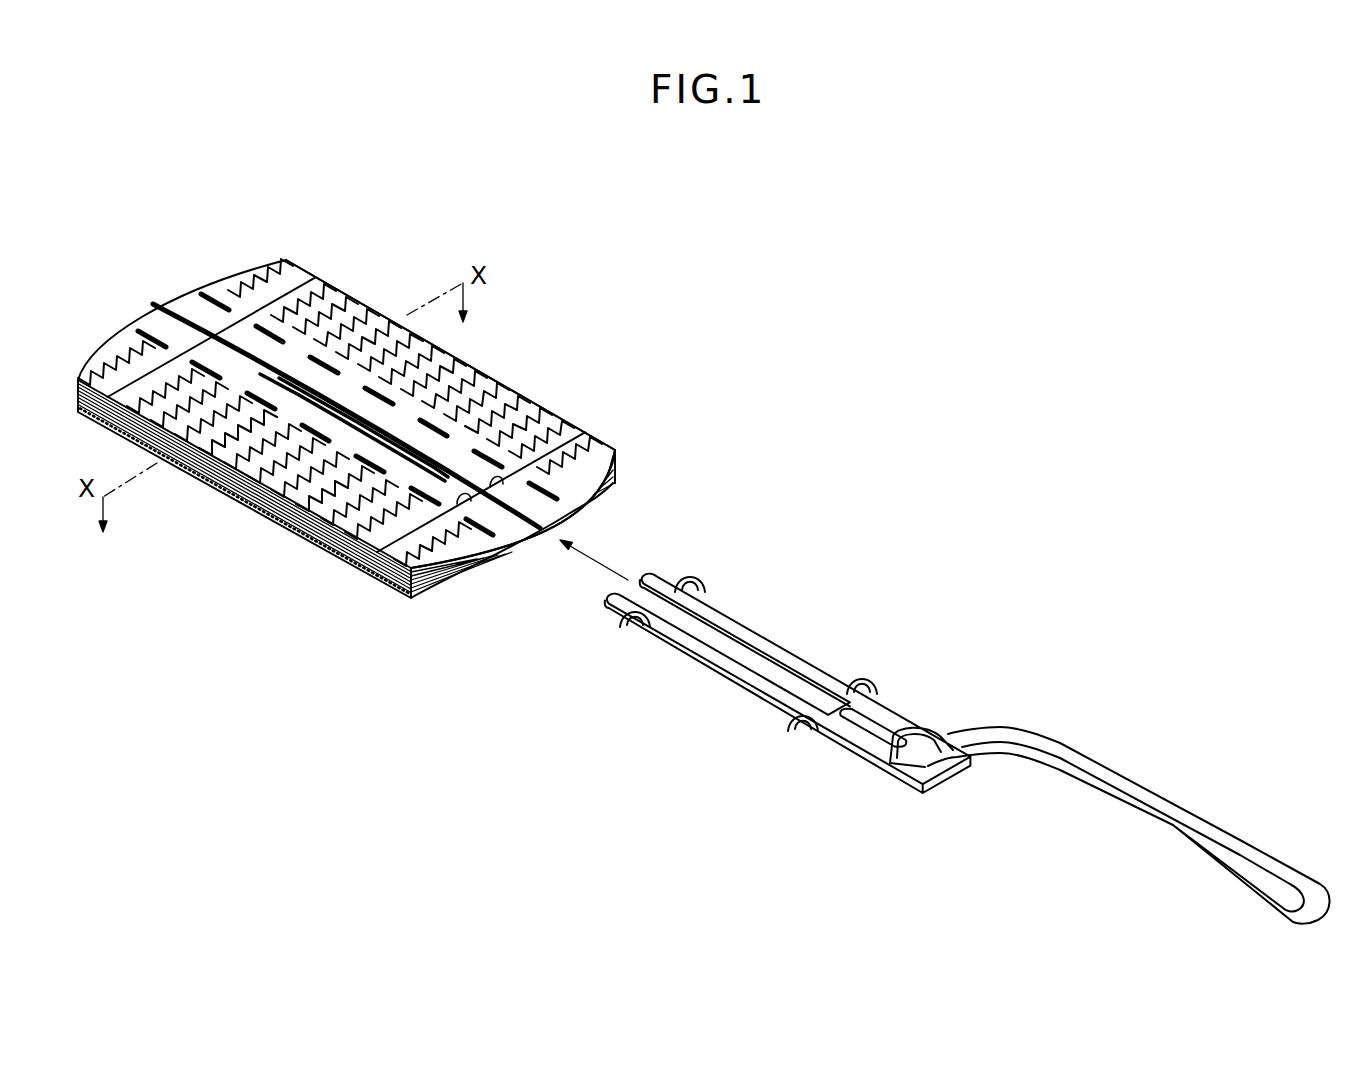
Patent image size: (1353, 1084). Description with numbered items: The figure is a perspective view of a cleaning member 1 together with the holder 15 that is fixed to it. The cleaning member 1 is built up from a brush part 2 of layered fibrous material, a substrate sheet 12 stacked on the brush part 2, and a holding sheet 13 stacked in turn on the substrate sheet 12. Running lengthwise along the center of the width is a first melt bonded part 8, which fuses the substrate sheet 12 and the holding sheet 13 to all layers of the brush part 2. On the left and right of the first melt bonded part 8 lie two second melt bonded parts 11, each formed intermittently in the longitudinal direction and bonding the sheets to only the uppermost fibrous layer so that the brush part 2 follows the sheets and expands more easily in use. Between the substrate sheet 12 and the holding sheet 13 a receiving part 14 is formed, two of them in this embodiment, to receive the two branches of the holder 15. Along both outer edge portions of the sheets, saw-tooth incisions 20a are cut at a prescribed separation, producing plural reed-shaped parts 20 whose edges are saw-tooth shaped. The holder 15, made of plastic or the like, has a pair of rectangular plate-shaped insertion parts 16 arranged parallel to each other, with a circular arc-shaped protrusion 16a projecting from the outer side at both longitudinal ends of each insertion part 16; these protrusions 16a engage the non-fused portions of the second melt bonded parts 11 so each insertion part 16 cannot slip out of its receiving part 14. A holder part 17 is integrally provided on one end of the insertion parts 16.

The cleaning member 1 is at (371, 257).
The brush part 2 is at (231, 504).
The first melt bonded part 8 is at (172, 307).
The second melt bonded part 11 is at (143, 330).
The substrate sheet 12 is at (604, 456).
The holding sheet 13 is at (596, 445).
The receiving part 14 is at (497, 483).
The holder 15 is at (940, 743).
The insertion part 16 is at (738, 670).
The circular arc-shaped protrusion 16a is at (626, 632).
The holder part 17 is at (1088, 750).
The reed-shaped part 20 is at (562, 432).
The incision 20a is at (518, 397).